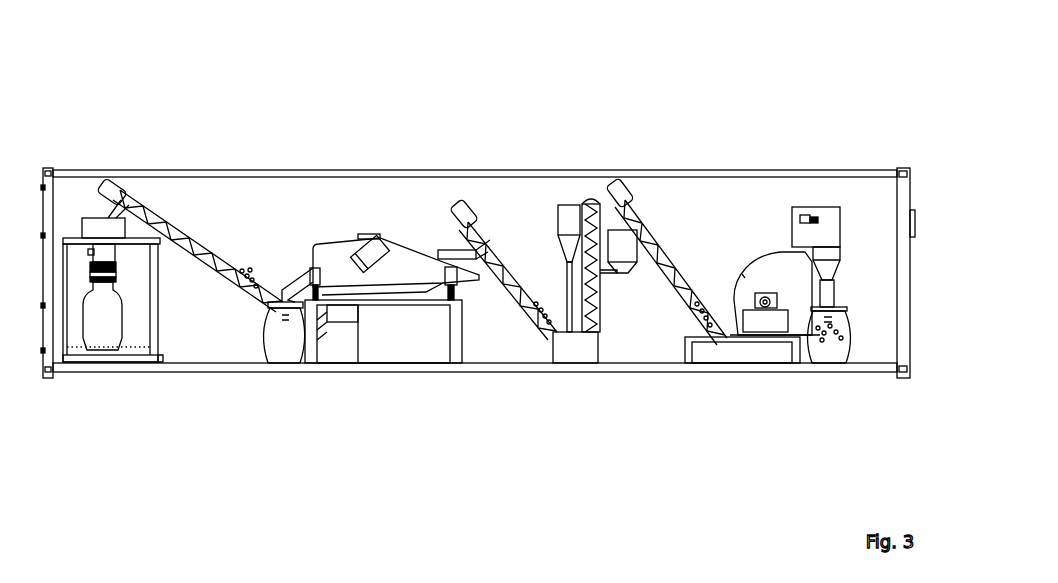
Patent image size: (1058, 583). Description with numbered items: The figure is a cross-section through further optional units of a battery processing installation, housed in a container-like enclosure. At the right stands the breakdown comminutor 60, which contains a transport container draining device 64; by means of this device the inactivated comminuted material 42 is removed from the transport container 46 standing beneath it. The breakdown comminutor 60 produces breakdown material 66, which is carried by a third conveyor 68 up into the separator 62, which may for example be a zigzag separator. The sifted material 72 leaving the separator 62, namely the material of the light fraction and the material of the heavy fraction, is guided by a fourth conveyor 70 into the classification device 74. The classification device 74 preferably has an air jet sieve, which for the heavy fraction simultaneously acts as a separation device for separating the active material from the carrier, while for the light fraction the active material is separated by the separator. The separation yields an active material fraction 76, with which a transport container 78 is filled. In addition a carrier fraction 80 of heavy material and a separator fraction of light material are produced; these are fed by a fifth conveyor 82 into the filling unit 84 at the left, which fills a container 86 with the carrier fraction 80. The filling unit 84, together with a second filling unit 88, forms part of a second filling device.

The inactivated comminuted material 42 is at (853, 340).
The transport container 46 is at (829, 340).
The breakdown comminutor 60 is at (773, 267).
The separator 62 is at (566, 212).
The transport container draining device 64 is at (835, 212).
The breakdown material 66 is at (697, 313).
The third conveyor 68 is at (643, 186).
The fourth conveyor 70 is at (466, 208).
The sifted material 72 is at (542, 323).
The classification device 74 is at (343, 250).
The active material fraction 76 is at (283, 293).
The transport container 78 is at (263, 347).
The carrier fraction 80 is at (248, 283).
The fifth conveyor 82 is at (118, 192).
The filling unit 84 is at (70, 242).
The container 86 is at (100, 333).
The second filling unit 88 is at (305, 242).